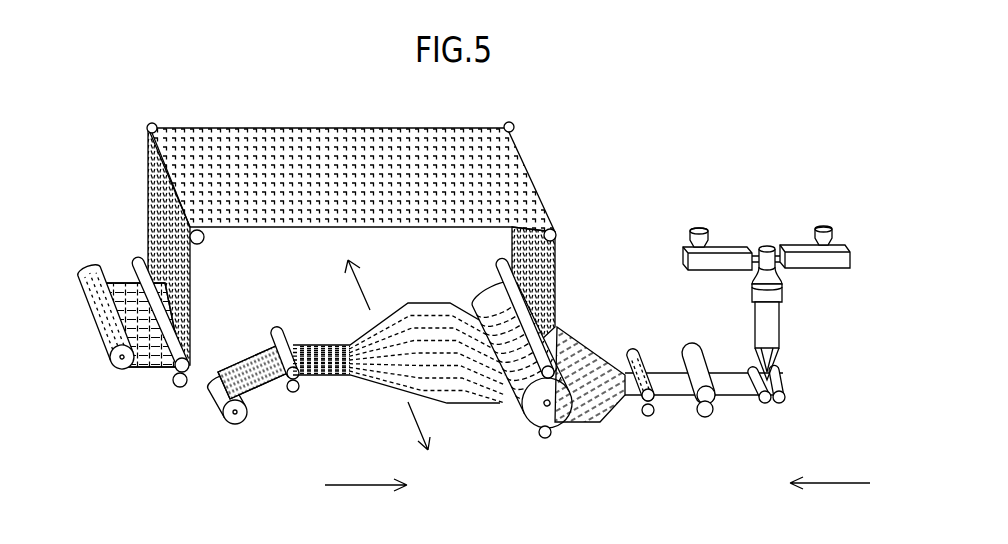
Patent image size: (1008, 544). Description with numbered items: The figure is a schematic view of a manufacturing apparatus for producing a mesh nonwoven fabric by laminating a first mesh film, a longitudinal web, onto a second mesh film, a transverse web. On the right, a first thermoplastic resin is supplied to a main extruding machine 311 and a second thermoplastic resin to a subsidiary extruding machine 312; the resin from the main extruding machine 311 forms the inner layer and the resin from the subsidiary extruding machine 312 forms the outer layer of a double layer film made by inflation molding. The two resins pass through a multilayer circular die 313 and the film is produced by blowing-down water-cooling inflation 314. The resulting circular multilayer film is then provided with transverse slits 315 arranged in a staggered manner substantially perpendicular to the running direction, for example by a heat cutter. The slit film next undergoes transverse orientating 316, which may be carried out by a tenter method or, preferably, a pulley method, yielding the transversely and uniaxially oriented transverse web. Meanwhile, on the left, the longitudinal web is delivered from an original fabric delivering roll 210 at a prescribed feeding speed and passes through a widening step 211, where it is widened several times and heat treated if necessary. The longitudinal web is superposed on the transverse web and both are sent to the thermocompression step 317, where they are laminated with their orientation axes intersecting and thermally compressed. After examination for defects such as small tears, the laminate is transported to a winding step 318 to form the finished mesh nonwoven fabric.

The original fabric delivering roll 210 is at (235, 424).
The widening step 211 is at (392, 376).
The main extruding machine 311 is at (717, 263).
The subsidiary extruding machine 312 is at (840, 246).
The multilayer circular die 313 is at (773, 246).
The blowing-down water-cooling inflation 314 is at (772, 326).
The transverse slits 315 is at (657, 396).
The transverse orientating 316 is at (577, 421).
The thermocompression step 317 is at (498, 281).
The winding step 318 is at (121, 362).